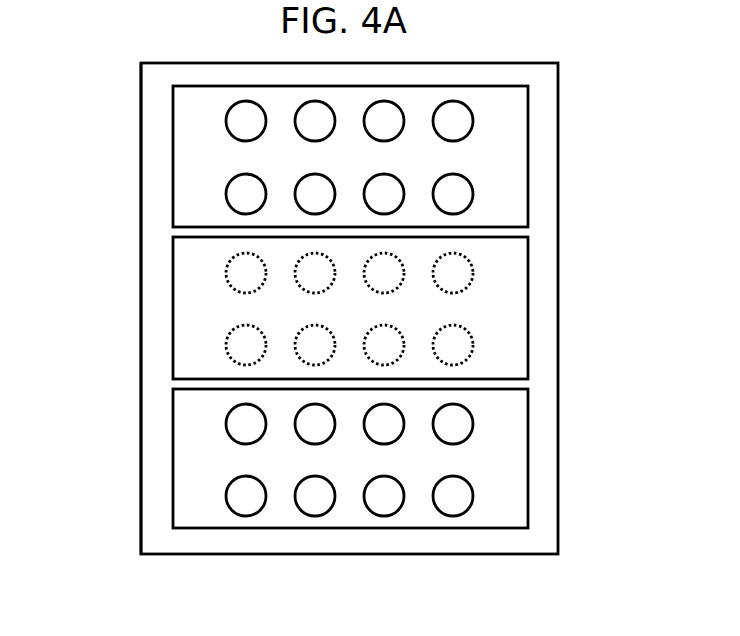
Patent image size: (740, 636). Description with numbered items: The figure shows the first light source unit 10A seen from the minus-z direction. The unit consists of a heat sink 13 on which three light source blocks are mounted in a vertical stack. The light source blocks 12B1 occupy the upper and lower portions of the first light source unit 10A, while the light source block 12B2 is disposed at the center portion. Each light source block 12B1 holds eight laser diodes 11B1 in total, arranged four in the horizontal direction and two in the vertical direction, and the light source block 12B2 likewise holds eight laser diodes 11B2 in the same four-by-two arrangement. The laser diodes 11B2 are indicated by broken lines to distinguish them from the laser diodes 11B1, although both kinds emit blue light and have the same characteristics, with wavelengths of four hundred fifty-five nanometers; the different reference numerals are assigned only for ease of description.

The first light source unit 10A is at (119, 116).
The heat sink 13 is at (150, 205).
The light source block 12B1 is at (502, 123).
The laser diode 11B1 is at (453, 194).
The light source block 12B2 is at (502, 267).
The laser diode 11B2 is at (453, 346).